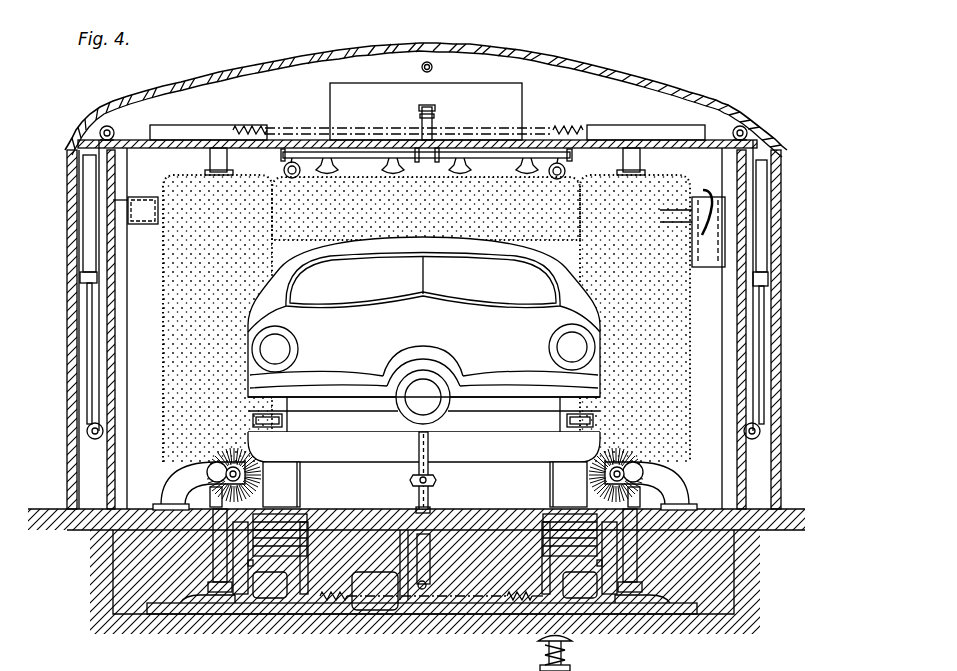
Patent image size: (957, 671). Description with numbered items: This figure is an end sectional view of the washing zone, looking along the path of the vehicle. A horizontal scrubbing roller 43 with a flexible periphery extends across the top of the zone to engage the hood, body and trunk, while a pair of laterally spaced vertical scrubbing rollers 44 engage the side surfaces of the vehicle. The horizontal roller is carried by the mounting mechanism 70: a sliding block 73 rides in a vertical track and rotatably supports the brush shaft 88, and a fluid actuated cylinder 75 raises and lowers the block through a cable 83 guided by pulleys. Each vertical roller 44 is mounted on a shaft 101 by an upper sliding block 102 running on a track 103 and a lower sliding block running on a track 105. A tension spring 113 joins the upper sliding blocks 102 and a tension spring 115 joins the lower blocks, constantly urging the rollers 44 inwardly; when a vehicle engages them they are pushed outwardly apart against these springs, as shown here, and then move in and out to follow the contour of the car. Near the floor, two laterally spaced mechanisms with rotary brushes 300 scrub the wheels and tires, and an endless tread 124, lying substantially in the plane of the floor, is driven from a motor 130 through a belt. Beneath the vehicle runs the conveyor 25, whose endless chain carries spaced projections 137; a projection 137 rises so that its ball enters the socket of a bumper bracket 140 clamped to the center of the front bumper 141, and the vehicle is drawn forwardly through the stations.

The conveyor 25 is at (407, 628).
The scrubbing roller 43 is at (362, 214).
The vertical scrubbing rollers 44 is at (180, 203).
The mechanism 70 is at (82, 284).
The sliding block 73 is at (153, 200).
The fluid actuated cylinder 75 is at (92, 200).
The cable 83 is at (88, 362).
The shaft 88 is at (163, 234).
The shaft 101 is at (644, 157).
The upper sliding block 102 is at (644, 127).
The track 103 is at (593, 128).
The track 105 is at (670, 610).
The tension spring 113 is at (560, 128).
The tension spring 115 is at (513, 597).
The endless tread 124 is at (270, 554).
The motor 130 is at (268, 582).
The projection 137 is at (418, 499).
The bumper bracket 140 is at (430, 470).
The bumper 141 is at (487, 450).
The rotary brushes 300 is at (233, 502).